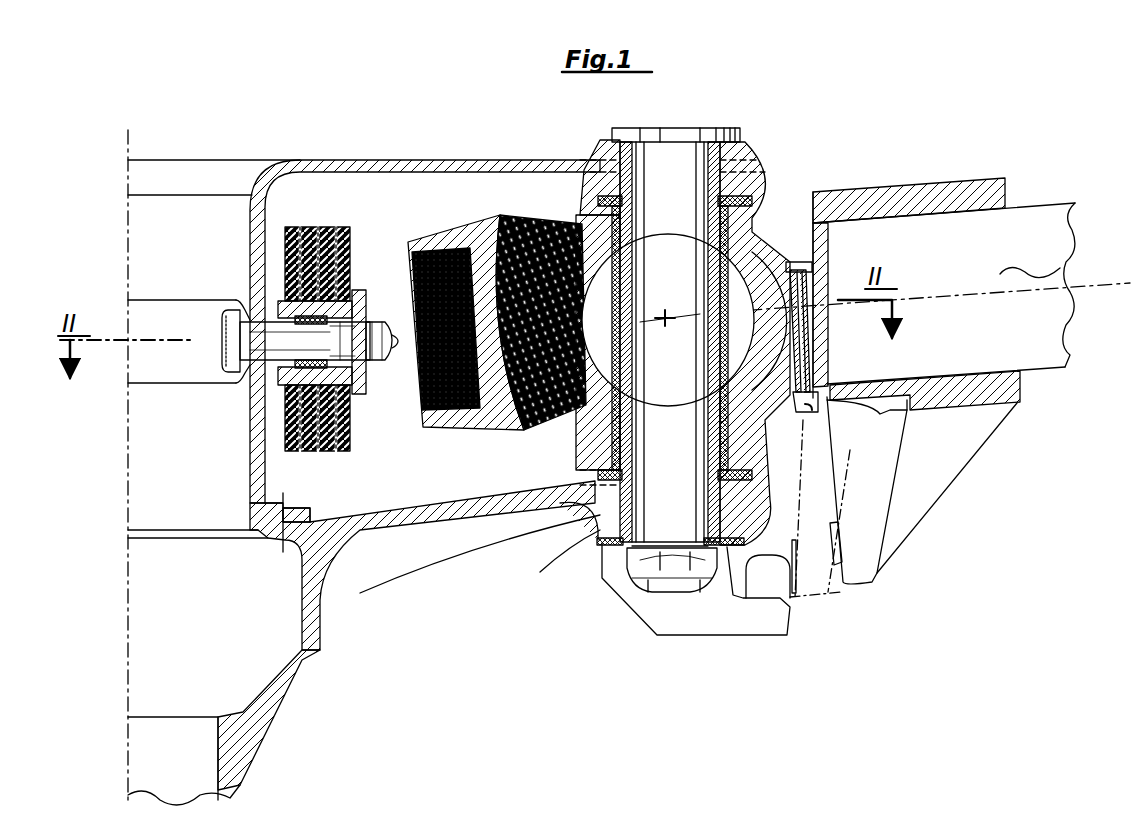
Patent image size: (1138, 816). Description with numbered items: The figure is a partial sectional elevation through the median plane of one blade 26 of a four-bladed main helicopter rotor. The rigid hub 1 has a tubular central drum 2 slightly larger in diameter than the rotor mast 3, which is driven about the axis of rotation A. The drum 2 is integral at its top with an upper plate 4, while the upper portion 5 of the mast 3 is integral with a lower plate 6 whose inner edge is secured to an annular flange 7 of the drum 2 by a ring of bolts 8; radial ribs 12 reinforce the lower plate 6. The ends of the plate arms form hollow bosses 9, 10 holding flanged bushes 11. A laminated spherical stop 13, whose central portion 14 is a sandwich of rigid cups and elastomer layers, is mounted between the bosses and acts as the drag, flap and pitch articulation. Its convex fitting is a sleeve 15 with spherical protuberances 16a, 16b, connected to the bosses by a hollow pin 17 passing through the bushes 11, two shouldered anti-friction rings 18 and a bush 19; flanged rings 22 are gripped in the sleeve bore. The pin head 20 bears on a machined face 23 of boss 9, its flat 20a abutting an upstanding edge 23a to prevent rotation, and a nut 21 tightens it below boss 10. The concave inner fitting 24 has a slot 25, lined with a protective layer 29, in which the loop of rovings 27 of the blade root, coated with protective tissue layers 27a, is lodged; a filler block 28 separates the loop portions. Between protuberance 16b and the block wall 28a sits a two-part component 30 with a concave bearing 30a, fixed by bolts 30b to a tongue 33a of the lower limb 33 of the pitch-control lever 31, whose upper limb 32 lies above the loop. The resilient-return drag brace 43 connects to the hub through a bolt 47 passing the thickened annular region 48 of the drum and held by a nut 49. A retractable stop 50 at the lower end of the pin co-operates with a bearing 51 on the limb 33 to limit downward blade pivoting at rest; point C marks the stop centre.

The rigid hub 1 is at (213, 158).
The axis of rotation A is at (128, 132).
The tubular central drum 2 is at (262, 230).
The rotor mast 3 is at (230, 742).
The upper plate 4 is at (427, 160).
The upper portion of the rotor mast 5 is at (302, 600).
The lower plate 6 is at (418, 514).
The annular flange 7 is at (297, 508).
The ring of bolts 8 is at (252, 491).
The hollow boss of the upper plate 9 is at (600, 145).
The hollow boss of the lower plate 10 is at (586, 520).
The flanged bushes 11 is at (736, 162).
The radial ribs 12 is at (363, 593).
The laminated spherical stop 13 is at (498, 440).
The central portion of the stop 14 is at (563, 416).
The sleeve 15 is at (581, 236).
The spherical protuberance 16a is at (586, 312).
The spherical protuberance 16b is at (756, 272).
The hollow metallic pin 17 is at (673, 170).
The shouldered anti-friction rings 18 is at (718, 220).
The bush 19 is at (622, 338).
The widened head of the pin 20 is at (690, 127).
The flat of the head 20a is at (633, 128).
The nut 21 is at (660, 568).
The anti-friction flanged rings 22 is at (744, 228).
The complementary face 23 is at (741, 127).
The upstanding edge 23a is at (610, 137).
The inner fitting 24 is at (436, 243).
The slot 25 is at (470, 252).
The blade 26 is at (1045, 194).
The loop of rovings of filaments 27 is at (414, 354).
The layers of protective tissue 27a is at (420, 412).
The filler block 28 is at (1068, 267).
The wall of the filler block 28a is at (830, 286).
The protective layer 29 is at (490, 248).
The two-part component 30 is at (812, 330).
The concave spherical bearing 30a is at (830, 316).
The bolts 30b is at (826, 300).
The pitch-control lever 31 is at (974, 461).
The upper limb 32 is at (940, 190).
The lower limb 33 is at (1016, 405).
The tongue 33a is at (840, 412).
The resilient return element 43 is at (311, 226).
The bolt 47 is at (258, 345).
The annular region 48 is at (240, 300).
The nut 49 is at (372, 323).
The retractable stop 50 is at (770, 620).
The bearing 51 is at (860, 560).
The center of ball joint C is at (666, 316).